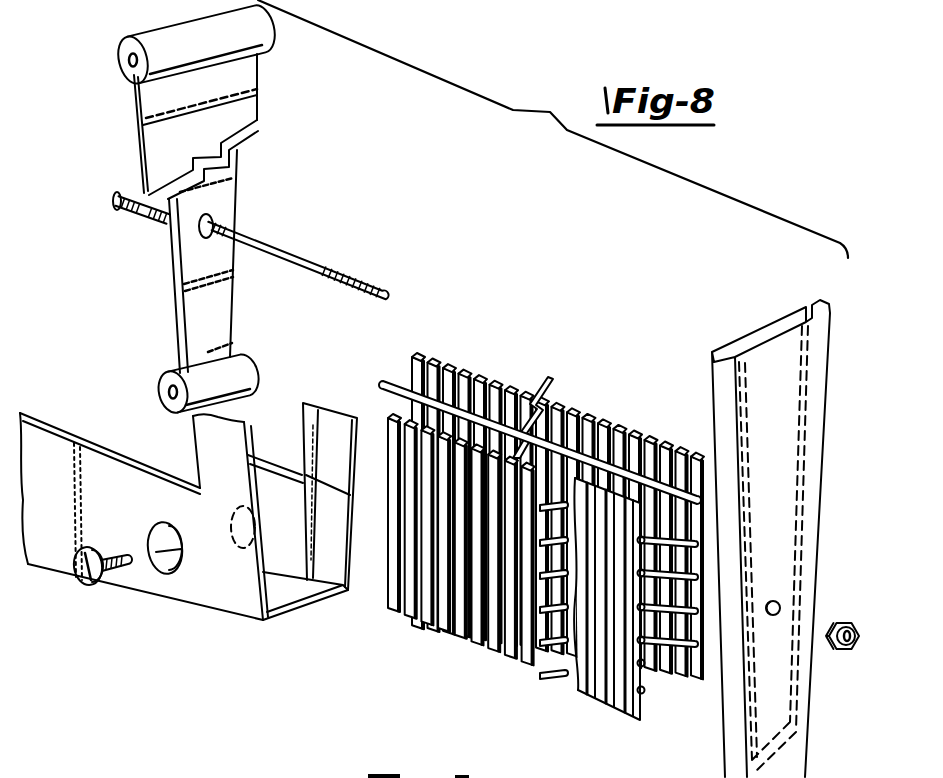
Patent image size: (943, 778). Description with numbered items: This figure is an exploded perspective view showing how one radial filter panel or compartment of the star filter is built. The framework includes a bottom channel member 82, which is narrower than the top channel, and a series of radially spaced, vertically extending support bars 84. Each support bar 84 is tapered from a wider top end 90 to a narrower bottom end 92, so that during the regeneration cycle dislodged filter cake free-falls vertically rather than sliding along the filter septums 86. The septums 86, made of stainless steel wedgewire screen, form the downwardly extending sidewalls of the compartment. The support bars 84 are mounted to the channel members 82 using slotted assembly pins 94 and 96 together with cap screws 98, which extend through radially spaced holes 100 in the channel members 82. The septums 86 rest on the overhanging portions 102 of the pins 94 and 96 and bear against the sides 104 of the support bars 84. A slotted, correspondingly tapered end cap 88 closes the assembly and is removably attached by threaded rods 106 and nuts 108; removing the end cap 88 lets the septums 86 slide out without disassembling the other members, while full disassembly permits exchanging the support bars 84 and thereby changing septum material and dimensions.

The bottom channel member 82 is at (226, 600).
The vertically extending support bar 84 is at (205, 261).
The filter septum 86 is at (473, 376).
The end cap 88 is at (796, 762).
The top end 90 is at (157, 97).
The bottom end 92 is at (227, 342).
The slotted assembly pin 94 is at (157, 32).
The slotted assembly pin 96 is at (238, 397).
The cap screw 98 is at (100, 585).
The hole 100 is at (178, 560).
The overhanging portion 102 is at (262, 58).
The side 104 is at (240, 197).
The threaded rod 106 is at (284, 250).
The nut 108 is at (843, 618).